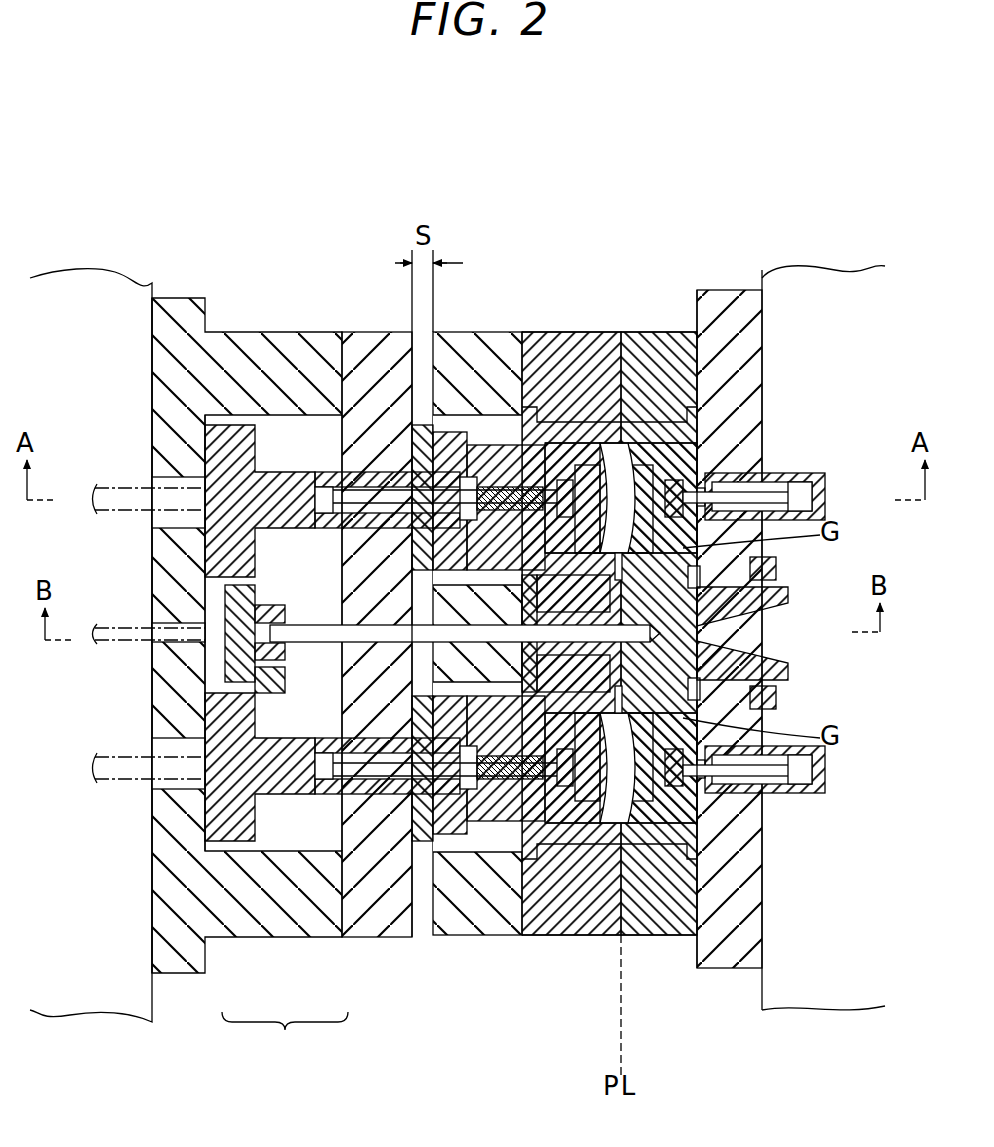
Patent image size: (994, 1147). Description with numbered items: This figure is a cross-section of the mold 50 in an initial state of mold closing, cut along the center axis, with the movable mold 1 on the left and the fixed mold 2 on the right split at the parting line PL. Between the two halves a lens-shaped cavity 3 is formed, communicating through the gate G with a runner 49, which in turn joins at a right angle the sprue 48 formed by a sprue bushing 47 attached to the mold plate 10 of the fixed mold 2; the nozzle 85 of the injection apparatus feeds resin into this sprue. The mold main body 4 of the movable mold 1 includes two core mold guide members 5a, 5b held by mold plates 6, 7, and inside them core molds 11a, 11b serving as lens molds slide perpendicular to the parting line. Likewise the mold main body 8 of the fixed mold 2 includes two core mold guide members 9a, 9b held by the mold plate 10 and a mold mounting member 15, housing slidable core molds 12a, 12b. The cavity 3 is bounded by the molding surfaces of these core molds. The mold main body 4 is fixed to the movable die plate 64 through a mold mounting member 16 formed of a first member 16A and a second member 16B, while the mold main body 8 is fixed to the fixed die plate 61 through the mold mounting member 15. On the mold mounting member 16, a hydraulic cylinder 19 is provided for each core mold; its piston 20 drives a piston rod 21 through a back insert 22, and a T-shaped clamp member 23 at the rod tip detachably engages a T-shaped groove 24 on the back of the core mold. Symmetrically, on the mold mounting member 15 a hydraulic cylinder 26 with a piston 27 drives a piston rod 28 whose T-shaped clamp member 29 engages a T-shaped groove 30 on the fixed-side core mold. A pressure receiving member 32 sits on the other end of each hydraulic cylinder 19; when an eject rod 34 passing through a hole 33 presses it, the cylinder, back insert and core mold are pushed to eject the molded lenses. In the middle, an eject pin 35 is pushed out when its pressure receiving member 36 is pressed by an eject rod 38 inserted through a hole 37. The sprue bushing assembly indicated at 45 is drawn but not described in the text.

The movable mold 1 is at (442, 1018).
The fixed mold 2 is at (698, 1040).
The cavity 3 is at (647, 485).
The mold main body 4 is at (540, 895).
The core mold guide member 5a is at (585, 470).
The core mold guide member 5b is at (545, 905).
The mold plate 6 is at (567, 910).
The mold plate 7 is at (452, 935).
The mold main body 8 is at (700, 930).
The core mold guide member 9a is at (690, 440).
The core mold guide member 9b is at (685, 900).
The mold plate 10 is at (660, 905).
The core mold 11a is at (590, 520).
The core mold 11b is at (575, 880).
The core mold 12a is at (653, 465).
The core mold 12b is at (645, 880).
The mold mounting member 15 is at (765, 935).
The mold mounting member 16 is at (285, 1031).
The first member 16A is at (255, 915).
The second member 16B is at (372, 930).
The hydraulic cylinder 19 is at (340, 537).
The piston 20 is at (322, 495).
The piston rod 21 is at (357, 497).
The back insert 22 is at (483, 455).
The T-shaped clamp member 23 is at (533, 483).
The T-shaped groove 24 is at (620, 478).
The hydraulic cylinder 26 is at (827, 488).
The piston 27 is at (827, 502).
The piston rod 28 is at (822, 473).
The T-shaped clamp member 29 is at (692, 505).
The T-shaped groove 30 is at (674, 490).
The pressure receiving member 32 is at (210, 440).
The hole 33 is at (187, 478).
The eject rod 34 is at (95, 497).
The eject pin 35 is at (317, 632).
The pressure receiving member 36 is at (240, 600).
The hole 37 is at (275, 660).
The eject rod 38 is at (95, 640).
The sprue bush unit 45 is at (816, 632).
The sprue bushing 47 is at (790, 598).
The sprue 48 is at (790, 665).
The runner 49 is at (700, 572).
The mold 50 is at (558, 205).
The fixed die plate 61 is at (775, 270).
The movable die plate 64 is at (155, 289).
The nozzle 85 is at (783, 583).